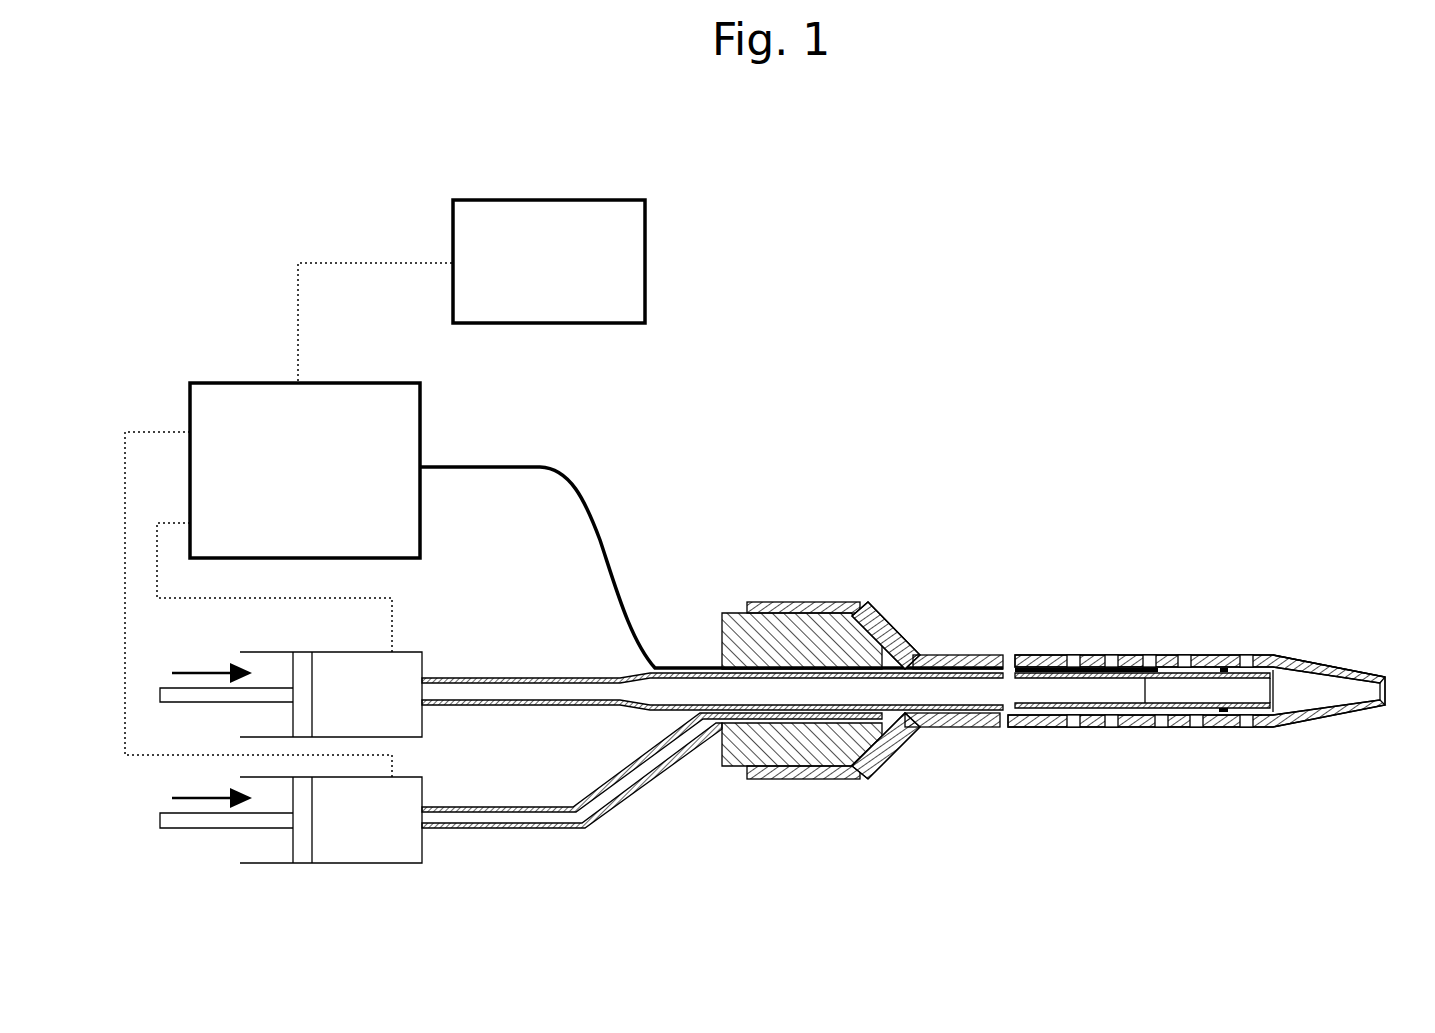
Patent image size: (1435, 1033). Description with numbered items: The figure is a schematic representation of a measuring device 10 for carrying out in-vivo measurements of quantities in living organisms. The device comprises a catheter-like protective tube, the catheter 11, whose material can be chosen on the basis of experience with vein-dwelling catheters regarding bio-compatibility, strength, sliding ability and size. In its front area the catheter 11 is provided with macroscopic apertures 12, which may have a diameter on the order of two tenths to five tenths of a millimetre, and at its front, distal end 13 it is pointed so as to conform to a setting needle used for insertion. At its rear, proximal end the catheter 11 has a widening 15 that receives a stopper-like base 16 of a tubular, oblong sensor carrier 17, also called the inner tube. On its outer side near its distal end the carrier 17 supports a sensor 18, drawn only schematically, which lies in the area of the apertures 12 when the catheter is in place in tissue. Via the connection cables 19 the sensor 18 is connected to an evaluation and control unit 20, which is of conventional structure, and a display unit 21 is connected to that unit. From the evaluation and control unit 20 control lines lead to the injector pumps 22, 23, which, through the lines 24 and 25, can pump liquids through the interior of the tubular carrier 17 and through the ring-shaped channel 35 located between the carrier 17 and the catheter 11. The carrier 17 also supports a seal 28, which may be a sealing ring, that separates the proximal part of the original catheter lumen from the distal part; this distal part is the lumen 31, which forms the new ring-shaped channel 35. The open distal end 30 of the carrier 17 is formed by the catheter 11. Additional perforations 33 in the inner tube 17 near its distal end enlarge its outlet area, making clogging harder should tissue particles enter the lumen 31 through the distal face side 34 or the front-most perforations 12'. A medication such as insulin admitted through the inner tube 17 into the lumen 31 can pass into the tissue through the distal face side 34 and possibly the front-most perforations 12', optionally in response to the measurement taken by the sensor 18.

The measuring device 10 is at (1036, 197).
The catheter 11 is at (1037, 654).
The macroscopic apertures 12 is at (1135, 686).
The front-most perforations 12' is at (1230, 659).
The distal end 13 is at (1340, 665).
The widening 15 is at (800, 601).
The stopper-like base 16 is at (855, 780).
The sensor carrier 17 is at (947, 712).
The sensor 18 is at (1145, 680).
The connection cables 19 is at (616, 563).
The evaluation and control unit 20 is at (422, 439).
The display unit 21 is at (648, 297).
The injector pump 22 is at (422, 653).
The injector pump 23 is at (422, 863).
The line 24 is at (508, 678).
The line 25 is at (522, 828).
The seal 28 is at (1222, 713).
The distal end of the carrier 30 is at (1272, 693).
The lumen 31 is at (1303, 690).
The additional perforations 33 is at (1263, 728).
The distal face side 34 is at (1386, 690).
The ring-shaped channel 35 is at (998, 728).